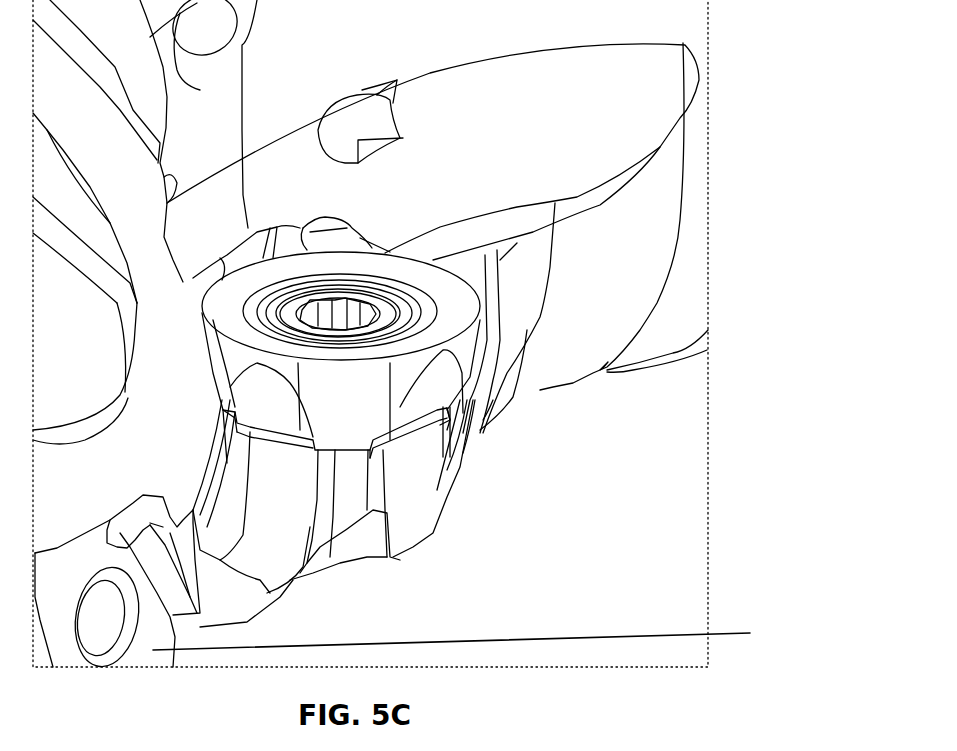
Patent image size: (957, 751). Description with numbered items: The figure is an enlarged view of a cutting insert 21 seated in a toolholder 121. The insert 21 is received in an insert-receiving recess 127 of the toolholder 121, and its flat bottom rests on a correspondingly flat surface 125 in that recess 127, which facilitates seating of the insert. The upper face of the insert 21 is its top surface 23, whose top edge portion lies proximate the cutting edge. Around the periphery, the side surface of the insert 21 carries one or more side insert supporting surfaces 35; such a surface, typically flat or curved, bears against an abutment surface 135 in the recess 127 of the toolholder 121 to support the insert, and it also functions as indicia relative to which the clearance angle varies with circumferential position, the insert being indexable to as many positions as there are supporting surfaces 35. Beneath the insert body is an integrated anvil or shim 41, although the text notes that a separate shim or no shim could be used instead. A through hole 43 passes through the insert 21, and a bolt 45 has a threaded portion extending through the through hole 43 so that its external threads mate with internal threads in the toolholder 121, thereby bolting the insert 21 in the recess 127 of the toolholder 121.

The toolholder 121 is at (625, 92).
The through hole 43 is at (333, 328).
The bolt 45 is at (342, 326).
The top surface 23 is at (460, 308).
The insert 21 is at (480, 345).
The side insert supporting surface 35 is at (443, 383).
The integrated anvil or shim 41 is at (443, 417).
The recess 127 is at (155, 632).
The flat surface 125 is at (476, 638).
The abutment surface 135 is at (192, 578).